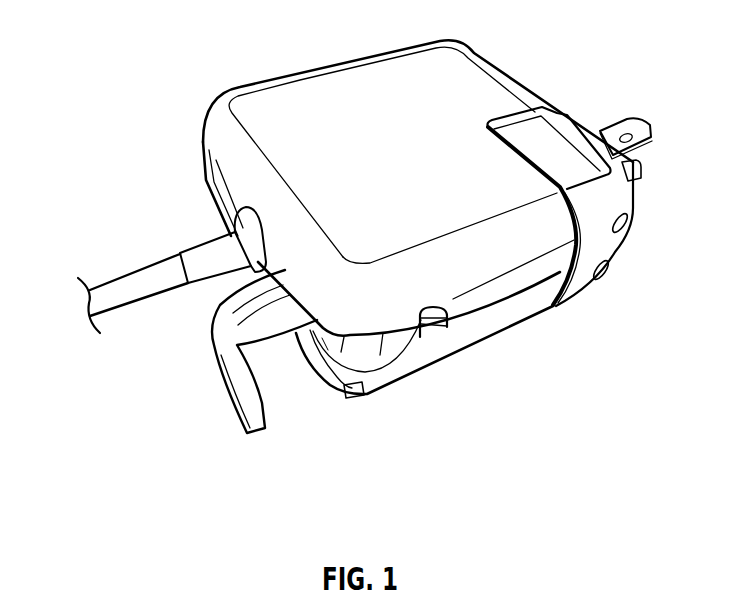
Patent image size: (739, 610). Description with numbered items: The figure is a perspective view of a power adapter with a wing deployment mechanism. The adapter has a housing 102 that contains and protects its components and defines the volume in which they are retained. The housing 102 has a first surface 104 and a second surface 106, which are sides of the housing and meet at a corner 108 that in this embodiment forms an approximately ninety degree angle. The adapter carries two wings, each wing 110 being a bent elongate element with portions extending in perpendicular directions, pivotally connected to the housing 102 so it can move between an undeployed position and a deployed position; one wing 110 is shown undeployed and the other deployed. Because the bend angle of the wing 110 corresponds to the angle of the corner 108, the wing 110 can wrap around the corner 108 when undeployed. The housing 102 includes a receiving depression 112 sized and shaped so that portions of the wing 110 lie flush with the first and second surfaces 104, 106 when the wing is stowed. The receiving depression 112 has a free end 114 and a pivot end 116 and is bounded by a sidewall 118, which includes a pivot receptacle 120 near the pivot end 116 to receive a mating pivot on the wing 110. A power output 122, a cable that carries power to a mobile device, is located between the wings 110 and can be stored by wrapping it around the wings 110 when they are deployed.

The housing 102 is at (255, 103).
The first surface 104 is at (521, 308).
The second surface 106 is at (235, 233).
The corner 108 is at (367, 388).
The wing 110 is at (207, 178).
The receiving depression 112 is at (387, 337).
The free end 114 is at (424, 331).
The pivot end 116 is at (308, 334).
The sidewall 118 is at (357, 394).
The pivot receptacle 120 is at (357, 391).
The power output 122 is at (121, 273).